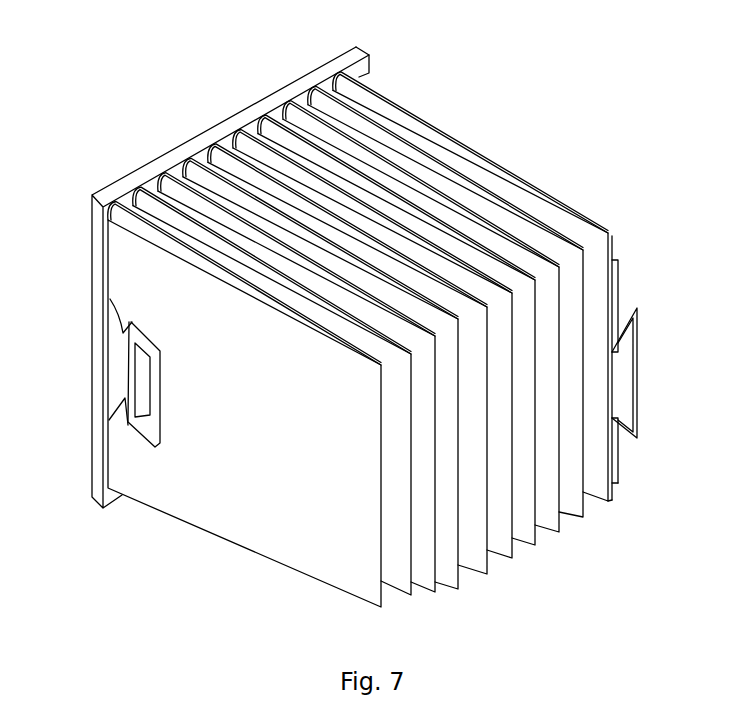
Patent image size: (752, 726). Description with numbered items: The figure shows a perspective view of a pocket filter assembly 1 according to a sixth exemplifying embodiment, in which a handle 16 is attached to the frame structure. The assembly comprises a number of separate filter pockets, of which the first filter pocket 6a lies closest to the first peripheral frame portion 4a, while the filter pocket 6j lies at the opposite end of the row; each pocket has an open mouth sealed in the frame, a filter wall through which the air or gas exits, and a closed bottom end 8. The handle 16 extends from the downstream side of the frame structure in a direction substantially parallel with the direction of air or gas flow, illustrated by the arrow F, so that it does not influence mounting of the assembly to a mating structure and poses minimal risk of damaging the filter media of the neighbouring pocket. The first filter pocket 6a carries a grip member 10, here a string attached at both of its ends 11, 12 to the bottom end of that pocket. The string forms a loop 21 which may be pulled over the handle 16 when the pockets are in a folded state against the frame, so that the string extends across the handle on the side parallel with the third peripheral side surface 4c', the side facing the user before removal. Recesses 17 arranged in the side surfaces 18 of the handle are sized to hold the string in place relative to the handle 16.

The pocket filter assembly 1 is at (613, 72).
The first peripheral frame portion 4a is at (370, 72).
The third peripheral side surface 4c' is at (195, 277).
The first filter pocket 6a is at (594, 240).
The filter pocket 6j is at (261, 519).
The closed bottom end 8 is at (612, 472).
The grip member 10 is at (618, 466).
The first end of the string 11 is at (617, 266).
The second end of the string 12 is at (618, 484).
The handle 16 is at (153, 398).
The recesses 17 is at (127, 322).
The side surfaces of the handle 18 is at (146, 338).
The loop 21 is at (639, 340).
The arrow indicating direction of air or gas flow F is at (47, 27).